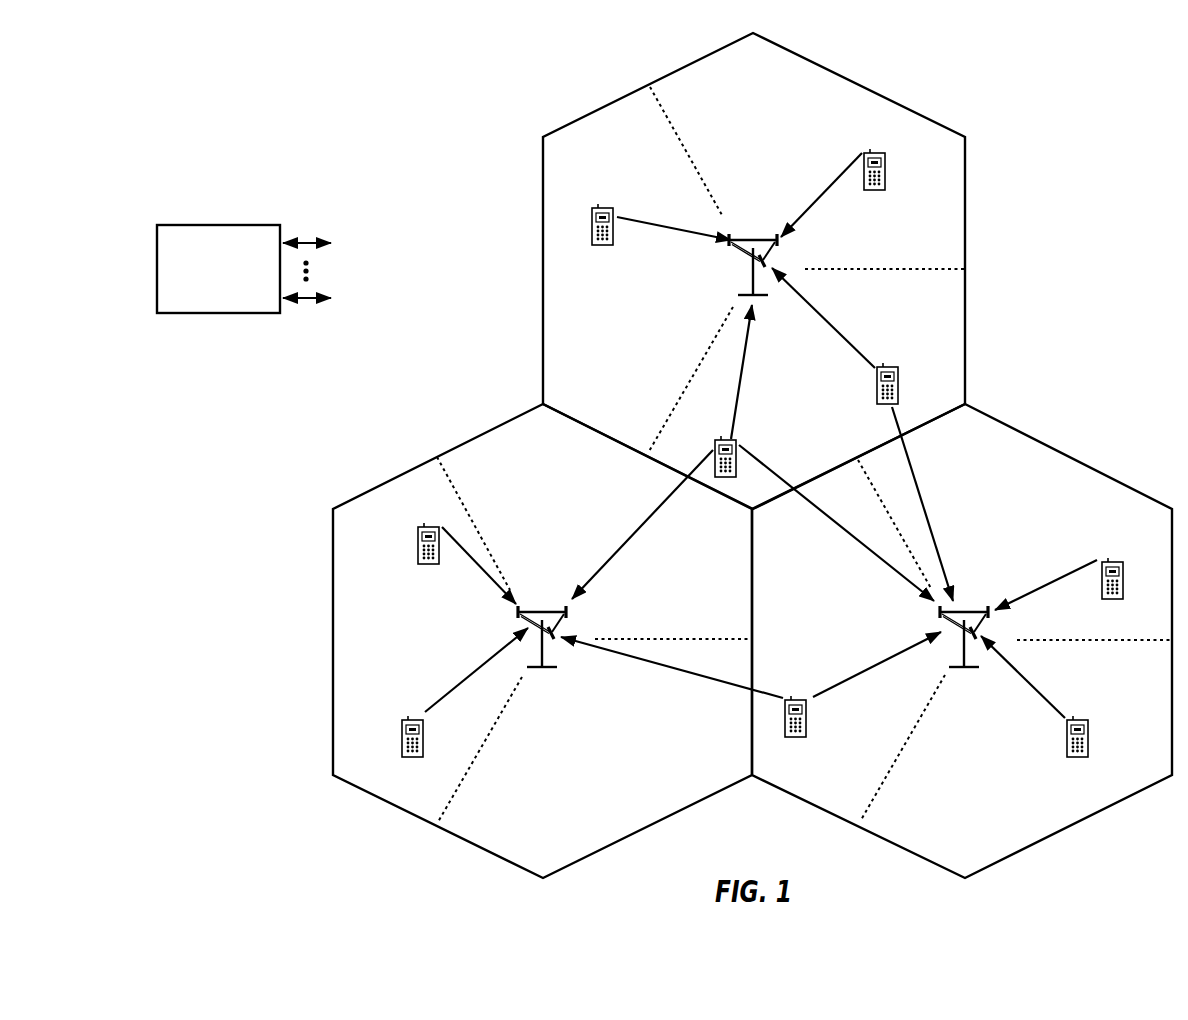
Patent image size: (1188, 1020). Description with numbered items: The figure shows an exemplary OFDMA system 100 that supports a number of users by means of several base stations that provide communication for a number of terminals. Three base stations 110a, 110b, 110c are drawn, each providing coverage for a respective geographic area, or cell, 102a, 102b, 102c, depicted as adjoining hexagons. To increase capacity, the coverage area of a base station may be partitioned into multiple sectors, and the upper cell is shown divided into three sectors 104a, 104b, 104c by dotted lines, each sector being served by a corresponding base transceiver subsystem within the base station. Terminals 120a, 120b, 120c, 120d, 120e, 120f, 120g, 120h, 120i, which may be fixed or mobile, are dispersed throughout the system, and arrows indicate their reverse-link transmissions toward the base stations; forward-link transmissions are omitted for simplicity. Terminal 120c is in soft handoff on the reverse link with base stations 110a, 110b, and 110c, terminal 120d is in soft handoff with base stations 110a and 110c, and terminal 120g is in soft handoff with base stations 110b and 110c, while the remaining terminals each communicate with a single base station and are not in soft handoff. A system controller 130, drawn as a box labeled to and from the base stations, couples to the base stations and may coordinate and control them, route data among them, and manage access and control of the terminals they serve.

The OFDMA system 100 is at (1130, 63).
The coverage area 102a is at (878, 70).
The coverage area 102b is at (436, 457).
The coverage area 102c is at (1078, 460).
The sector 104a is at (781, 72).
The sector 104b is at (594, 404).
The sector 104c is at (963, 404).
The base station 110a is at (763, 225).
The base station 110b is at (540, 610).
The base station 110c is at (967, 610).
The terminal 120a is at (882, 139).
The terminal 120b is at (598, 205).
The terminal 120c is at (721, 437).
The terminal 120d is at (896, 351).
The terminal 120e is at (424, 523).
The terminal 120f is at (408, 716).
The terminal 120g is at (803, 684).
The terminal 120h is at (1087, 705).
The terminal 120i is at (1120, 547).
The system controller 130 is at (210, 224).